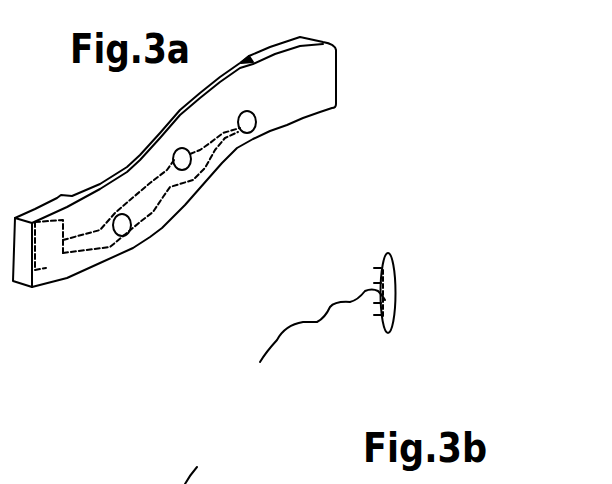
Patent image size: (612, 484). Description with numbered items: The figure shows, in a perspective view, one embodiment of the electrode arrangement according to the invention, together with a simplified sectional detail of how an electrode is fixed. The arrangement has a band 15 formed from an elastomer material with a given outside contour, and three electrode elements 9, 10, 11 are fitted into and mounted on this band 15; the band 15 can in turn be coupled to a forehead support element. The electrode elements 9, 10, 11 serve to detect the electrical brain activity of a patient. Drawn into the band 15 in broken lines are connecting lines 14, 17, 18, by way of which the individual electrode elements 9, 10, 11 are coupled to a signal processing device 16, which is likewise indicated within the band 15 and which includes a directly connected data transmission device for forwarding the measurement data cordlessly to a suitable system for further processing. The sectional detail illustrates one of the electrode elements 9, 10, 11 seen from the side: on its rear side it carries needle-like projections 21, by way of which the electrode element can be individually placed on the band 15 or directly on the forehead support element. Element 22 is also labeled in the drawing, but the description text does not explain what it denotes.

In FIG. 3A, the electrode element 9 is at (122, 225).
In FIG. 3B, the electrode element 9 is at (445, 272).
In FIG. 3A, the electrode element 10 is at (182, 159).
In FIG. 3B, the electrode element 10 is at (385, 293).
In FIG. 3A, the electrode element 11 is at (247, 122).
In FIG. 3B, the electrode element 11 is at (385, 293).
In FIG. 3A, the connecting line 14 is at (92, 232).
In FIG. 3A, the band 15 is at (293, 92).
In FIG. 3A, the signal processing device 16 is at (53, 242).
In FIG. 3A, the connecting line 17 is at (150, 182).
In FIG. 3A, the connecting line 18 is at (168, 188).
In FIG. 3B, the needle-like projection 21 is at (382, 316).
In FIG. 3B, the connector element 22 is at (197, 467).